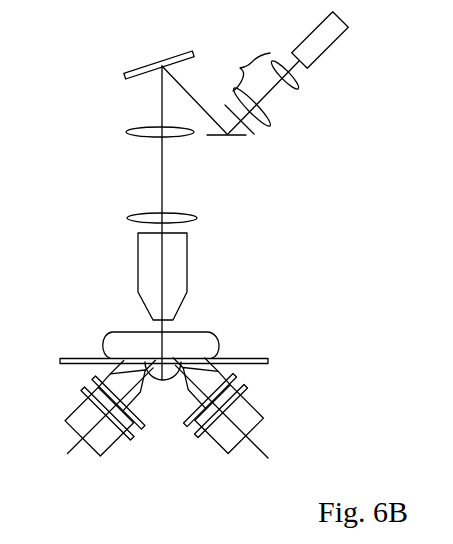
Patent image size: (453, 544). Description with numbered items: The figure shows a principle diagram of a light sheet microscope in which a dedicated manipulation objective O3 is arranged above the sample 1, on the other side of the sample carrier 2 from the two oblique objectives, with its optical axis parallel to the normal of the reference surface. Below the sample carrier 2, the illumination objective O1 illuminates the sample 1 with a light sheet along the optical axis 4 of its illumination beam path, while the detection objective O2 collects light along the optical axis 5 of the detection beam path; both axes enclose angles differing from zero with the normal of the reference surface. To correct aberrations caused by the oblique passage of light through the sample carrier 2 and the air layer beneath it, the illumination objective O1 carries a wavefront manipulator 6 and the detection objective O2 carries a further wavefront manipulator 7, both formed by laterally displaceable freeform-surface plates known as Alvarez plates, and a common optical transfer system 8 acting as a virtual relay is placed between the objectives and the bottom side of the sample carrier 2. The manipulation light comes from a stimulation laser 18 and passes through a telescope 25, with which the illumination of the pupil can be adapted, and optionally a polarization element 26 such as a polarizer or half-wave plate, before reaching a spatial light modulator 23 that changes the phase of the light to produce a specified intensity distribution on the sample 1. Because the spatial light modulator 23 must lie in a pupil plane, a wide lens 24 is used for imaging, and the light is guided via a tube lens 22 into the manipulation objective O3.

The spatial light modulator 23 is at (142, 62).
The wide lens 24 is at (132, 128).
The telescope 25 is at (260, 83).
The stimulation laser 18 is at (320, 52).
The polarization element 26 is at (255, 135).
The tube lens 22 is at (140, 213).
The manipulation objective O3 is at (143, 264).
The sample 1 is at (215, 340).
The sample carrier 2 is at (78, 358).
The wavefront manipulator 6 is at (82, 386).
The further wavefront manipulator 7 is at (247, 379).
The optical axis of the illumination objective 4 is at (80, 450).
The optical axis of the detection beam path 5 is at (254, 447).
The illumination objective O1 is at (110, 452).
The detection objective O2 is at (243, 417).
The optical transfer system 8 is at (163, 381).